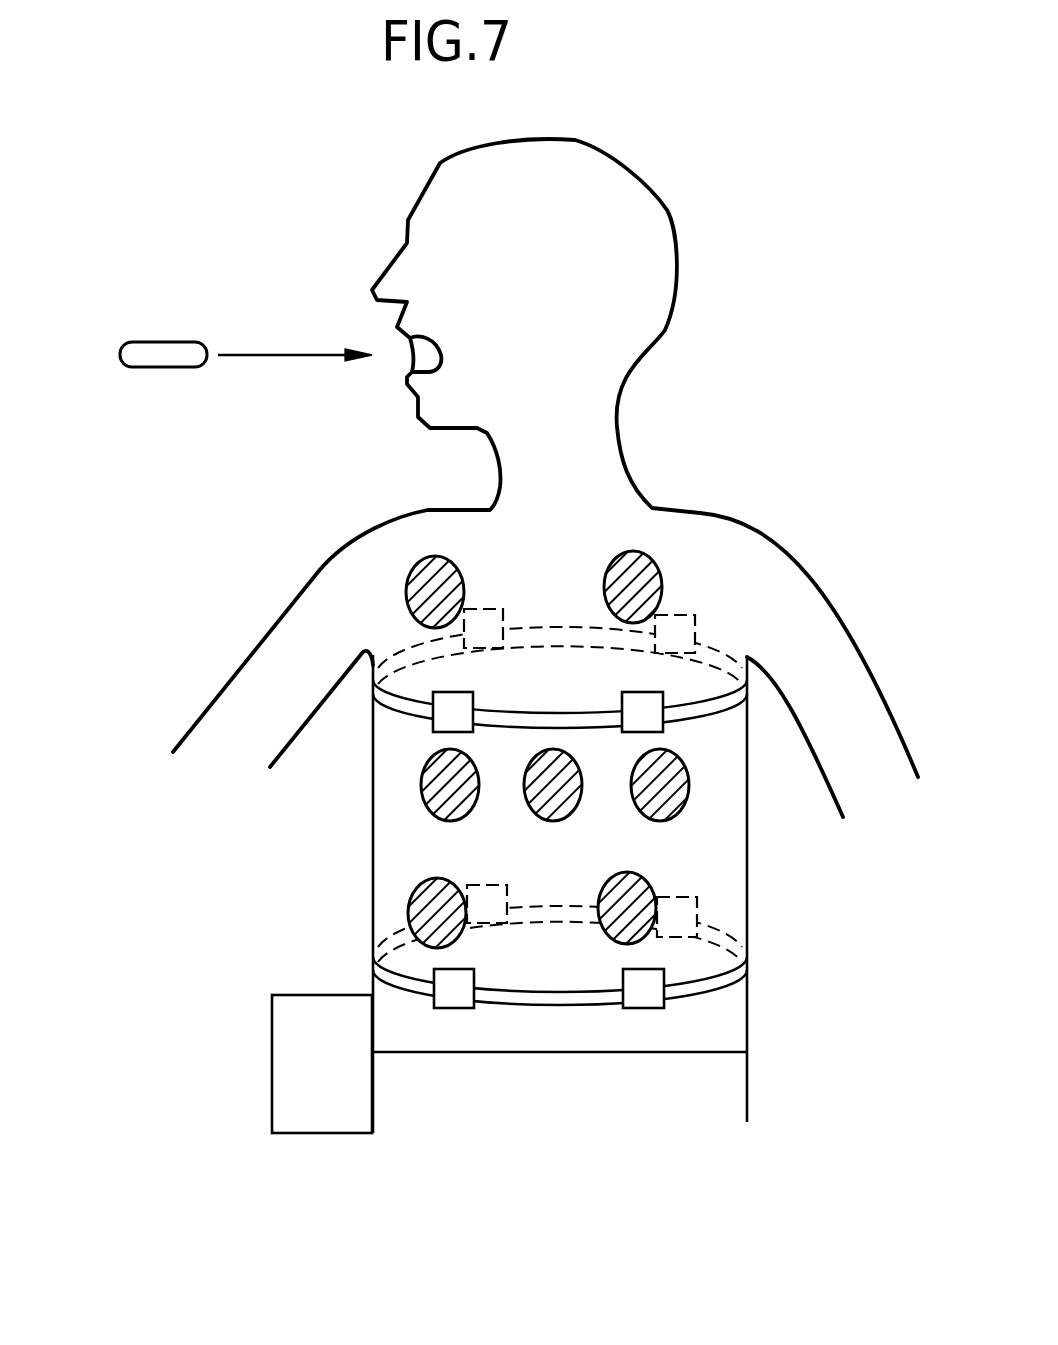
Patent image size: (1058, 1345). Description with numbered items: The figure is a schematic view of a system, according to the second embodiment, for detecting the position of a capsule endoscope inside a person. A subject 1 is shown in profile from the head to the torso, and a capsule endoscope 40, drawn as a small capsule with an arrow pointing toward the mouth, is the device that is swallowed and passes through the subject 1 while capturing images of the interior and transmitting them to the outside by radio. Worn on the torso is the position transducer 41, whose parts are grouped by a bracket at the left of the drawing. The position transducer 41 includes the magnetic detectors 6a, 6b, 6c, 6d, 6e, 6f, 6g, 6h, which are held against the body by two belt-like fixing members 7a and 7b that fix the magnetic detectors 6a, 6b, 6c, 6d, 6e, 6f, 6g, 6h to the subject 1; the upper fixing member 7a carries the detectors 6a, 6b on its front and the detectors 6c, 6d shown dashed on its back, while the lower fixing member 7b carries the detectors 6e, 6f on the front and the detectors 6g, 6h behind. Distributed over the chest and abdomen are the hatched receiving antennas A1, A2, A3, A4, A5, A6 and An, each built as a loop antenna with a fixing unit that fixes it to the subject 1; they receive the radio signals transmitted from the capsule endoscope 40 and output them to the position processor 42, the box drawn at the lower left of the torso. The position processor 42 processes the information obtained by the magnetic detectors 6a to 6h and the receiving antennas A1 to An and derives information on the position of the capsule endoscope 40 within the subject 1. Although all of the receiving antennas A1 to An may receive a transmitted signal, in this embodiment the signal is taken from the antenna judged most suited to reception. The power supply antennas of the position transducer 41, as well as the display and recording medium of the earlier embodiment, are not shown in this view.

The subject 1 is at (580, 138).
The capsule endoscope 40 is at (170, 364).
The position transducer 41 is at (117, 782).
The position processor 42 is at (285, 1052).
The fixing member 7a is at (395, 697).
The fixing member 7b is at (560, 1005).
The magnetic detector 6a is at (445, 718).
The magnetic detector 6b is at (640, 692).
The magnetic detector 6c is at (675, 615).
The magnetic detector 6d is at (484, 609).
The magnetic detector 6e is at (454, 1008).
The magnetic detector 6f is at (645, 1008).
The magnetic detector 6g is at (674, 897).
The magnetic detector 6h is at (486, 885).
The receiving antenna A1 is at (440, 797).
The receiving antenna A2 is at (573, 815).
The receiving antenna A3 is at (680, 812).
The receiving antenna A4 is at (455, 560).
The receiving antenna A5 is at (658, 562).
The receiving antenna A6 is at (462, 937).
The receiving antenna An is at (600, 936).